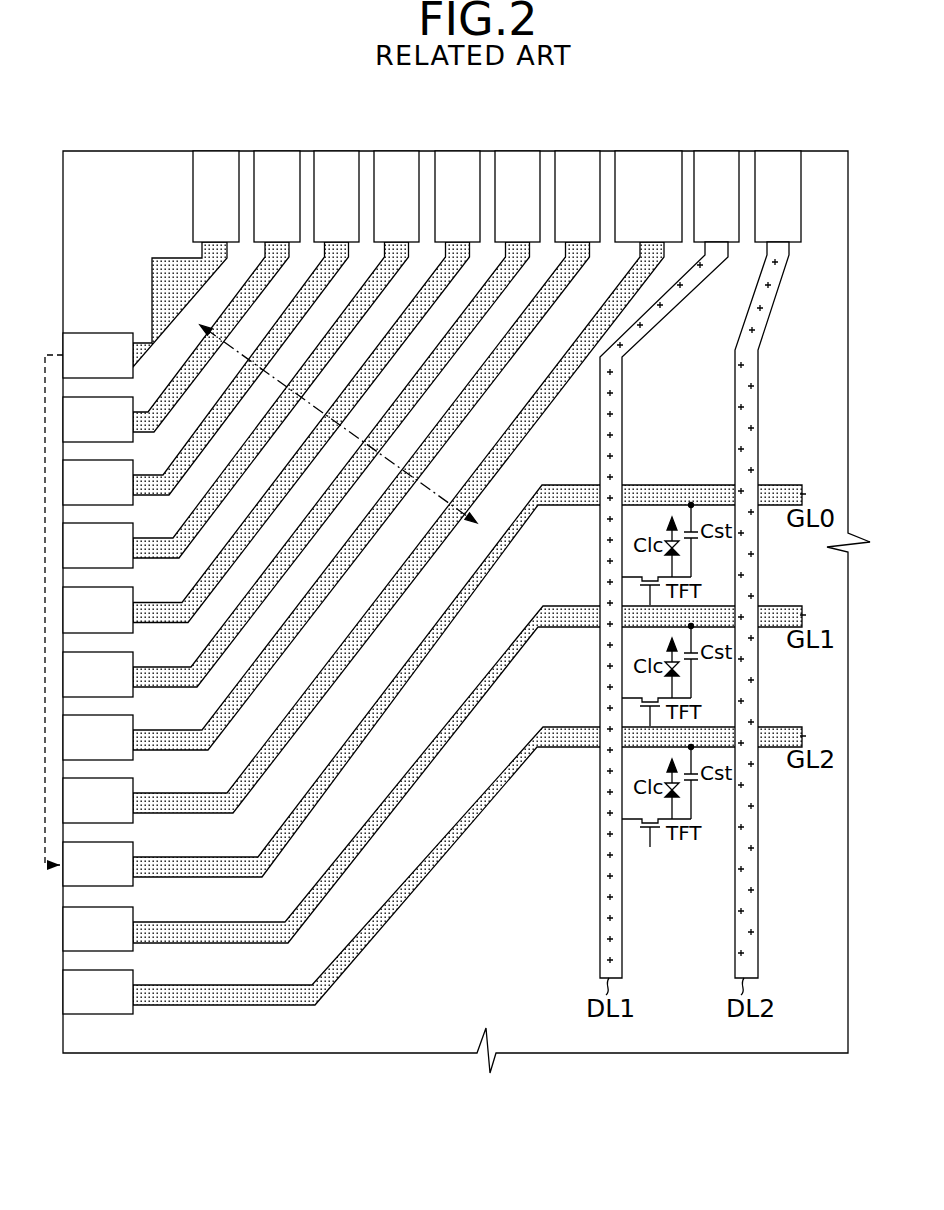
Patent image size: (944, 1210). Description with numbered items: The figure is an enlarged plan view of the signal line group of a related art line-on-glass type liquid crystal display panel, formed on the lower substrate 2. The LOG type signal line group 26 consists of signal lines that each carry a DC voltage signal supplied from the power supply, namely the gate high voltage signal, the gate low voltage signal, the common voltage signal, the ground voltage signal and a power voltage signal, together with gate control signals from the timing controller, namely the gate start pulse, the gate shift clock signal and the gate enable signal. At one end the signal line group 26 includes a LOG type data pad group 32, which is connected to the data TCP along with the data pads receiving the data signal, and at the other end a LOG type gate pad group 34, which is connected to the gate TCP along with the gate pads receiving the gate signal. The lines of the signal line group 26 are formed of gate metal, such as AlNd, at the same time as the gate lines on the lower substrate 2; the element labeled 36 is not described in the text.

The lower substrate 2 is at (849, 220).
The LOG type signal line group 26 is at (147, 206).
The LOG type data pad group 32 is at (647, 140).
The LOG type gate pad group 34 is at (102, 330).
The link lines 36 is at (407, 893).